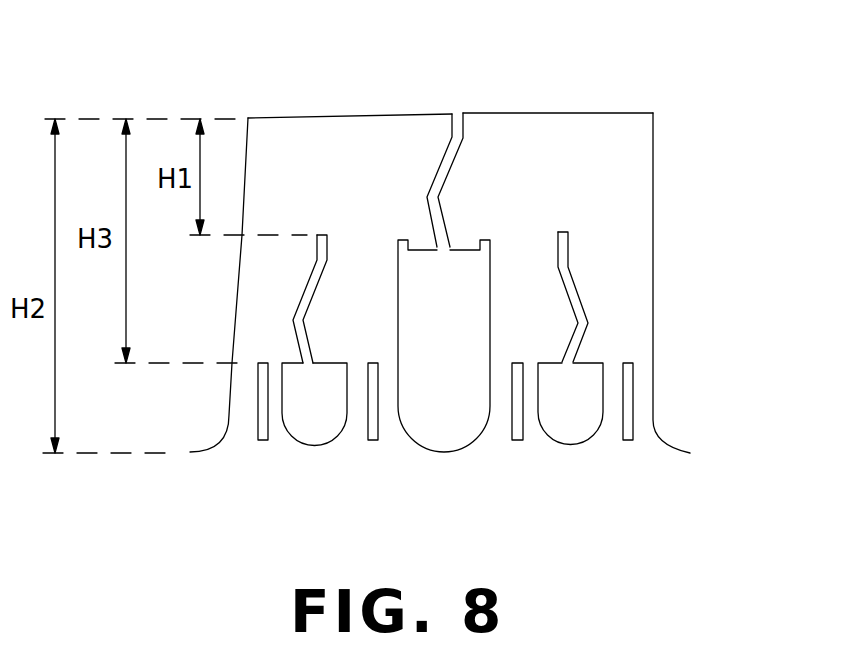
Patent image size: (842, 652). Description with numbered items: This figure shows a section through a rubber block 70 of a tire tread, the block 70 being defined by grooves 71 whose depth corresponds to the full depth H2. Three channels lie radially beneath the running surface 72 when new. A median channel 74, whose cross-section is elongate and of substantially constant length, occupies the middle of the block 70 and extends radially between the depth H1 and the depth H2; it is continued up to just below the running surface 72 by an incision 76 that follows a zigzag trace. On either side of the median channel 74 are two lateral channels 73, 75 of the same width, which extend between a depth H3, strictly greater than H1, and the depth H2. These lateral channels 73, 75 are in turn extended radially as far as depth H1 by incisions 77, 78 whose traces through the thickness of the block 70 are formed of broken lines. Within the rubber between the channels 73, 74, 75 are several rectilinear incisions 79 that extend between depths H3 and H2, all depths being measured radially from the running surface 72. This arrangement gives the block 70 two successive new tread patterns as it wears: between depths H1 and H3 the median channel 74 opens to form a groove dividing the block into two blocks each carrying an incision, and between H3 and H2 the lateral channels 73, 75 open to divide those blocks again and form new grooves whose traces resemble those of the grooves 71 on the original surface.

The rubber block 70 is at (459, 295).
The grooves 71 is at (685, 265).
The running surface 72 is at (494, 113).
The lateral channel 73 is at (308, 433).
The median channel 74 is at (448, 443).
The lateral channel 75 is at (572, 433).
The incision 76 is at (451, 160).
The incision 77 is at (312, 255).
The incision 78 is at (565, 268).
The rectilinear incisions 79 is at (257, 438).